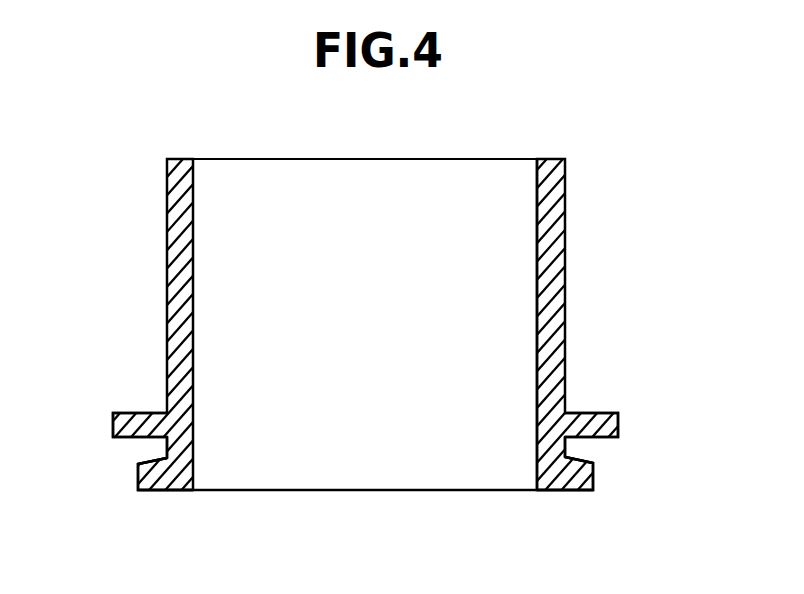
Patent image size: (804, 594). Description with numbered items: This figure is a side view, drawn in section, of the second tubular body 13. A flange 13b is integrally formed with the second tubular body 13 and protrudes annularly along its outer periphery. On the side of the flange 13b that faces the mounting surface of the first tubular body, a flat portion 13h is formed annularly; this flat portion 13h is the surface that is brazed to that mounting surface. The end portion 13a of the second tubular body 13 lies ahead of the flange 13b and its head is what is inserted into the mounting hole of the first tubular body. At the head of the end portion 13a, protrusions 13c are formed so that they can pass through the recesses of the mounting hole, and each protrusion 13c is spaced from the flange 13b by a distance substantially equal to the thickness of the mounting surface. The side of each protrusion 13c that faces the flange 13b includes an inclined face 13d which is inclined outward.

The second tubular body 13 is at (595, 188).
The end portion 13a is at (541, 472).
The flange 13b is at (612, 413).
The flat portion 13h is at (568, 450).
The inclined face 13d is at (568, 457).
The protrusion 13c is at (168, 491).